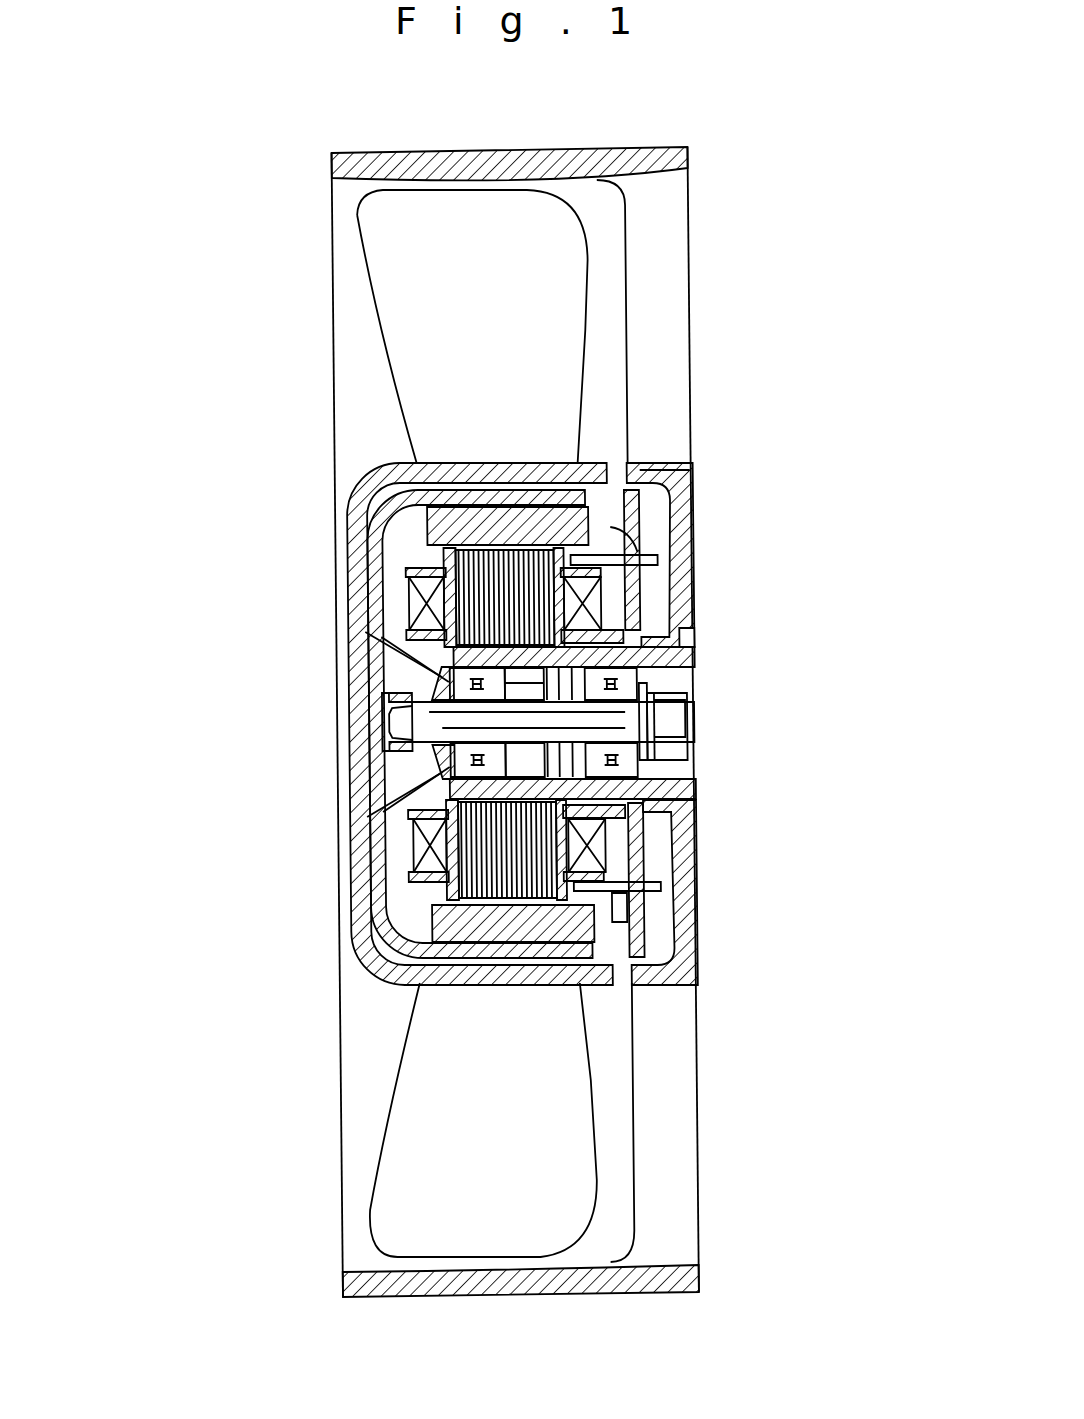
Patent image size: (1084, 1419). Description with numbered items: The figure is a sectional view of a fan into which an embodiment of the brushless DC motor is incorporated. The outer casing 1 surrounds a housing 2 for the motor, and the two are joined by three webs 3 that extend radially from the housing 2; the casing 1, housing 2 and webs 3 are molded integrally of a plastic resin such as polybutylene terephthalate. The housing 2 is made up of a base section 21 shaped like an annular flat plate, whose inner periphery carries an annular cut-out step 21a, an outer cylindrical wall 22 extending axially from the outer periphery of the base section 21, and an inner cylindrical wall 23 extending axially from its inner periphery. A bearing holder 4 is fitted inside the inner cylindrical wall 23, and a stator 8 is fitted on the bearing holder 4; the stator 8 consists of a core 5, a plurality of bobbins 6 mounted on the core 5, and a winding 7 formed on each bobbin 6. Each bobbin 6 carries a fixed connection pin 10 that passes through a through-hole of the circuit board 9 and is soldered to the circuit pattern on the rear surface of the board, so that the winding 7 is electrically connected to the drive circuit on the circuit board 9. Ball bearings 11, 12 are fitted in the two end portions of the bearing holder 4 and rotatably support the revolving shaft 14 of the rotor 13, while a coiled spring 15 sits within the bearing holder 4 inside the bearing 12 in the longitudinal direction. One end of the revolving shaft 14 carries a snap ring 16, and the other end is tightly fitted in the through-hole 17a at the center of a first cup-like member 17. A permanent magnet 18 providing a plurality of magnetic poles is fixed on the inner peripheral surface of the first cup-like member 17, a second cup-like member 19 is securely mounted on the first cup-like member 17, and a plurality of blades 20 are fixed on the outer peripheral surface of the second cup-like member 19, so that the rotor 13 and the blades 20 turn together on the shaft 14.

The casing 1 is at (575, 146).
The housing 2 is at (697, 553).
The webs 3 is at (667, 327).
The bearing holder 4 is at (693, 792).
The core 5 is at (352, 925).
The bobbins 6 is at (408, 573).
The winding 7 is at (410, 603).
The stator 8 is at (427, 513).
The circuit board 9 is at (645, 858).
The connection pin 10 is at (640, 508).
The ball bearing 11 is at (420, 767).
The ball bearing 12 is at (633, 677).
The rotor 13 is at (400, 460).
The revolving shaft 14 is at (395, 740).
The coiled spring 15 is at (633, 770).
The snap ring 16 is at (697, 703).
The first cup-like member 17 is at (365, 858).
The through-hole 17a is at (393, 708).
The permanent magnet 18 is at (400, 982).
The second cup-like member 19 is at (375, 970).
The blades 20 is at (557, 262).
The base section 21 is at (696, 506).
The annular cut-out step 21a is at (695, 632).
The outer cylindrical wall 22 is at (650, 460).
The inner cylindrical wall 23 is at (695, 835).